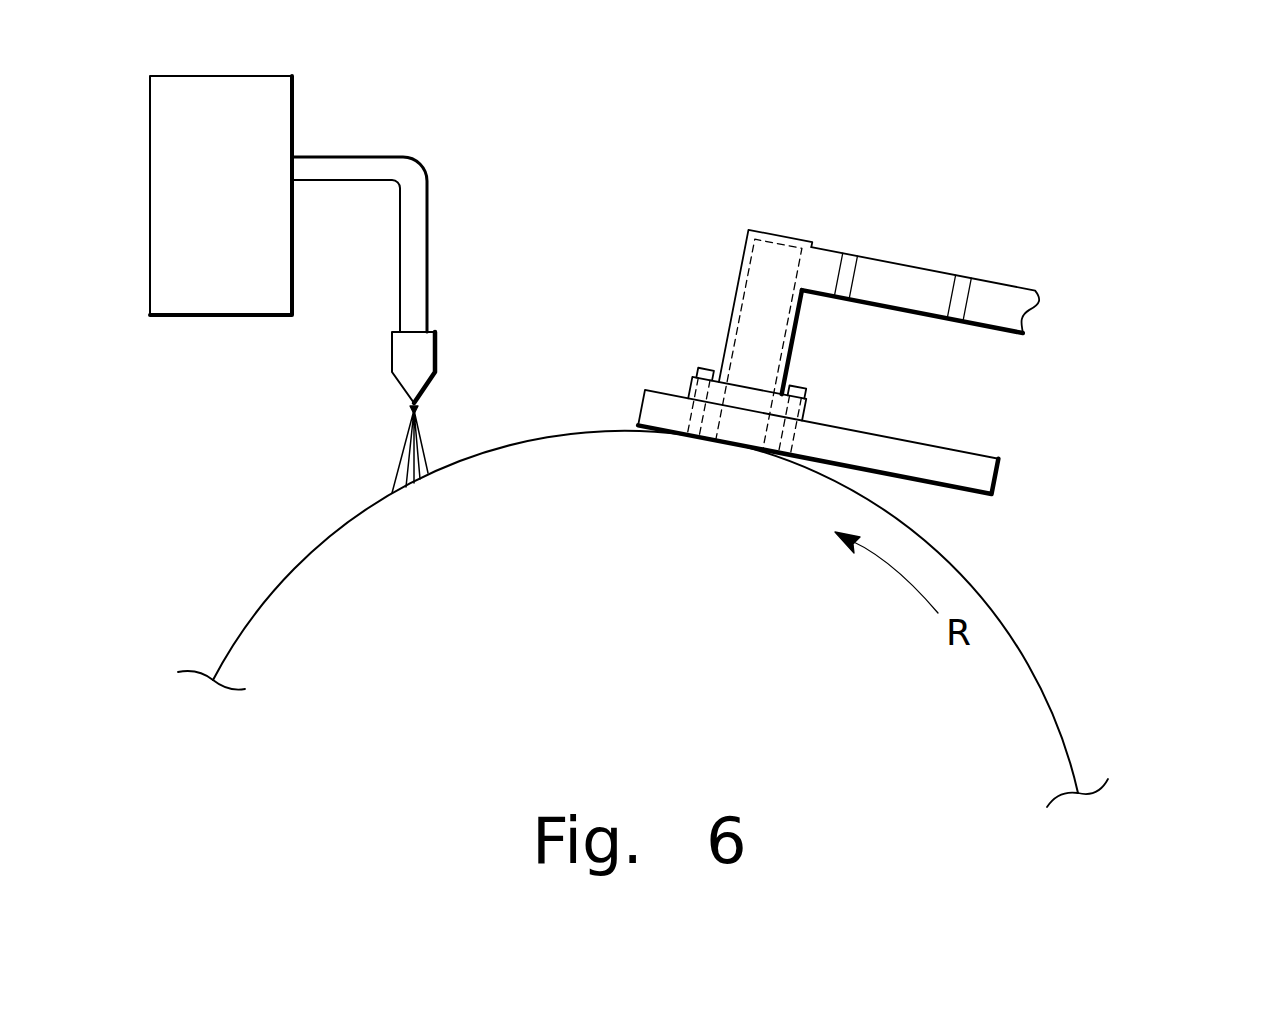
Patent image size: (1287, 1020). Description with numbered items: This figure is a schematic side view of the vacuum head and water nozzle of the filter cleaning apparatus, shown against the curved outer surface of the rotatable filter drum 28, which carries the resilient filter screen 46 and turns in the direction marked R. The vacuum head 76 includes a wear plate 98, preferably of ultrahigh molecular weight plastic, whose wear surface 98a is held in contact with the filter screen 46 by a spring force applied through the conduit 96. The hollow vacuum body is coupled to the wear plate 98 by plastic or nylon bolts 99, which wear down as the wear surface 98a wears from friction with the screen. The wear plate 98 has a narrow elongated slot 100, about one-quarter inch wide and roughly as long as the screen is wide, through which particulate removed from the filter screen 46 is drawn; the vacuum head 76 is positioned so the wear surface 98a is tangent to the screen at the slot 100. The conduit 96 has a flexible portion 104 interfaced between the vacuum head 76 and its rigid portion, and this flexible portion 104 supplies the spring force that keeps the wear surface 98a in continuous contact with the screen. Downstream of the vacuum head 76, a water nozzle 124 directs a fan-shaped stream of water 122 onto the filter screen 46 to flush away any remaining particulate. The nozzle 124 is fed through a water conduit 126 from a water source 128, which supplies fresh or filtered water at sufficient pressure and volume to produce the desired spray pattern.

The filter drum 28 is at (705, 619).
The resilient filter screen 46 is at (1010, 635).
The vacuum head 76 is at (748, 174).
The conduit 96 is at (1042, 221).
The wear plate 98 is at (831, 432).
The wear surface 98a is at (900, 480).
The bolts 99 is at (707, 367).
The elongated slot 100 is at (745, 430).
The flexible portion 104 is at (906, 287).
The stream of water 122 is at (400, 455).
The water nozzle 124 is at (437, 347).
The water conduit 126 is at (345, 157).
The water source 128 is at (250, 228).